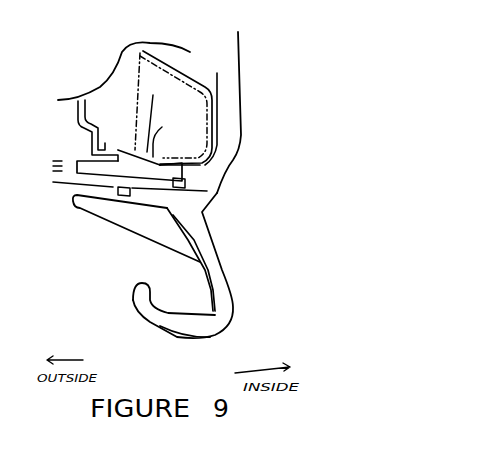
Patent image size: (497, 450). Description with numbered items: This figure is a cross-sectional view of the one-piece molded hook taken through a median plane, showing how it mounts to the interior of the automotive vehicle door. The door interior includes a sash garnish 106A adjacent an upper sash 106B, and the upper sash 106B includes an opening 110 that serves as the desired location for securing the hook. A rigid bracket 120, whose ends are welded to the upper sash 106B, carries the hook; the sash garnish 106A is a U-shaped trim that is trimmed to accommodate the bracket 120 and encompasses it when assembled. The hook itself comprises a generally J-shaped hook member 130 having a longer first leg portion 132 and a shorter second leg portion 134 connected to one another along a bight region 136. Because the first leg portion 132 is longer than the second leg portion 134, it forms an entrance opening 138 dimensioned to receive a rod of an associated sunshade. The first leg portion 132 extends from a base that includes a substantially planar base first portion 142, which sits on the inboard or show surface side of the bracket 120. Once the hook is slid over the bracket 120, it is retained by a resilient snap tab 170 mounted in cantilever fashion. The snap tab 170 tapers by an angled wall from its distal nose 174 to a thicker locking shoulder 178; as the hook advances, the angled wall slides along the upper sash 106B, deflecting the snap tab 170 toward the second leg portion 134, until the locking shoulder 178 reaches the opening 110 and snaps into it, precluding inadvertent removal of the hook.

The snap tab 170 is at (119, 96).
The nose 174 is at (171, 105).
The opening 110 is at (168, 126).
The locking shoulder 178 is at (118, 150).
The bracket 120 is at (117, 182).
The sash garnish 106A is at (227, 111).
The upper sash 106B is at (211, 142).
The J-shaped hook member 130 is at (257, 227).
The first leg portion 132 is at (220, 267).
The base first portion 142 is at (102, 210).
The entrance opening 138 is at (105, 290).
The second leg portion 134 is at (135, 303).
The bight region 136 is at (192, 337).